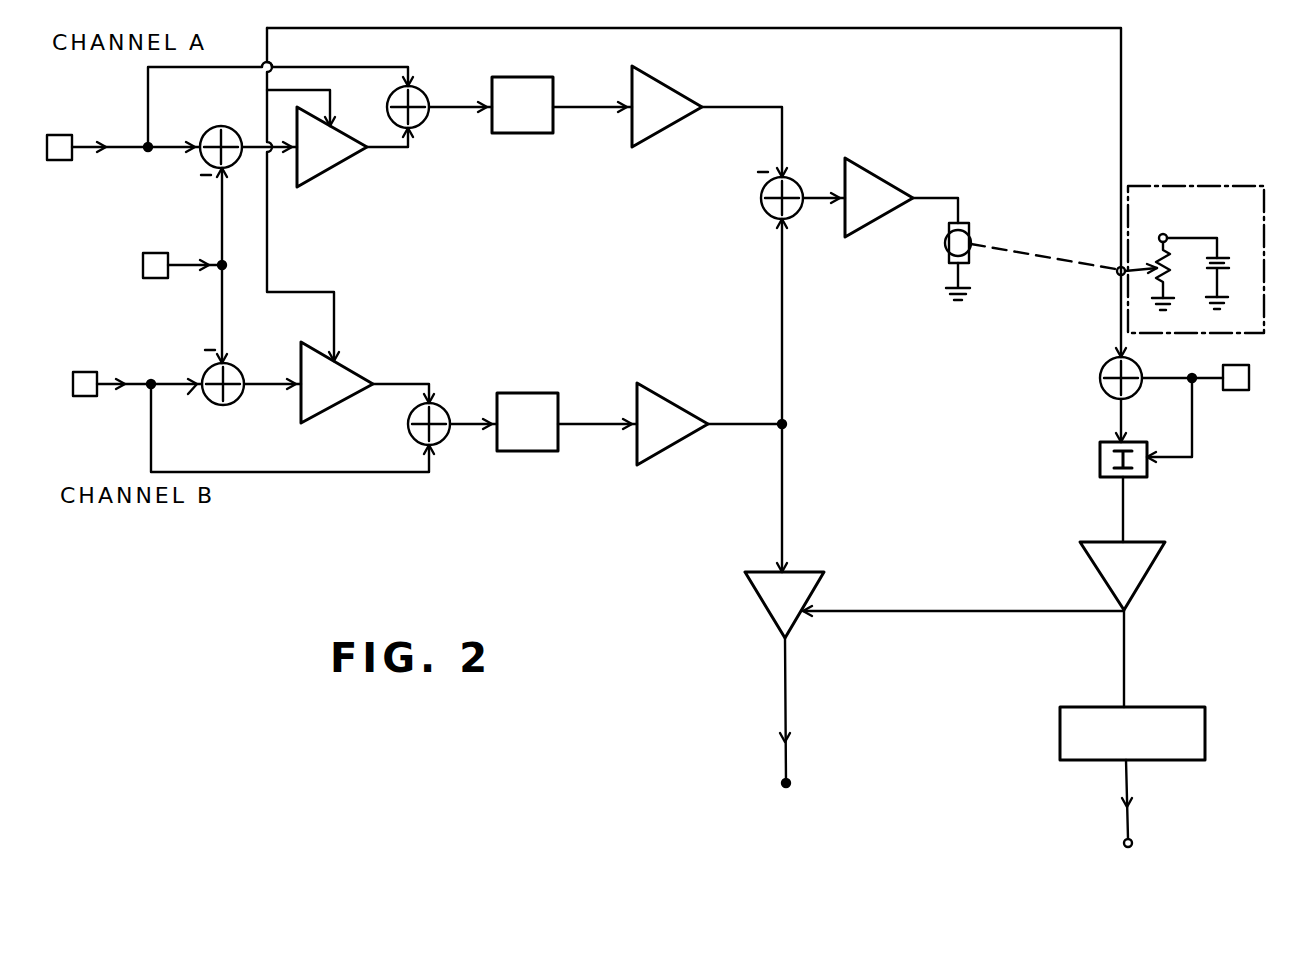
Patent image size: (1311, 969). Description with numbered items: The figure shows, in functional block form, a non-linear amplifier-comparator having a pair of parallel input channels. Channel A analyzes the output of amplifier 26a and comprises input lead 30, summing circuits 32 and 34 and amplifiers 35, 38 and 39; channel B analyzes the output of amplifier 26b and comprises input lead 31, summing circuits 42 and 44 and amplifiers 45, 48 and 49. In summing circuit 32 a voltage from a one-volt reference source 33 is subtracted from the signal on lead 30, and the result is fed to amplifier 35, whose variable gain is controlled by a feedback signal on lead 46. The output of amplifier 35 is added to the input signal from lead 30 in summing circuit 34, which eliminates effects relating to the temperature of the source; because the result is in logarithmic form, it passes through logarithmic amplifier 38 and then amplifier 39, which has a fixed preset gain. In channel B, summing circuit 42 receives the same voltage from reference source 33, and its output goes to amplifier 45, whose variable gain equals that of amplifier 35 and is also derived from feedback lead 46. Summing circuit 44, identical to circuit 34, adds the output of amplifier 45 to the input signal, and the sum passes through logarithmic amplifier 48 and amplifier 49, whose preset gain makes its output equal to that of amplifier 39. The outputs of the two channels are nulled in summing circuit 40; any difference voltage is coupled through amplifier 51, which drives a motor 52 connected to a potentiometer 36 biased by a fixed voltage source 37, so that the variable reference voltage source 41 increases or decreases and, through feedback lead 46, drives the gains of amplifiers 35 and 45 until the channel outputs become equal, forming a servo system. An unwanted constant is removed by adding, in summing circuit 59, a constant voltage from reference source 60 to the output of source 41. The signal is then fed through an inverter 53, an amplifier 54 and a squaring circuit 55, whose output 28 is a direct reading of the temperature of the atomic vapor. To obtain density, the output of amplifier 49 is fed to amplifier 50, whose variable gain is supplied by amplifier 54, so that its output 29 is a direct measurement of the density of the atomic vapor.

The amplifier 26a is at (58, 135).
The amplifier 26b is at (82, 372).
The output 28 is at (1133, 840).
The output 29 is at (791, 780).
The input lead 30 is at (84, 149).
The input lead 31 is at (107, 386).
The summing circuit 32 is at (232, 128).
The reference source 33 is at (163, 238).
The summing circuit 34 is at (430, 80).
The amplifier 35 is at (332, 169).
The potentiometer 36 is at (1168, 279).
The fixed voltage source 37 is at (1218, 257).
The logarithmic amplifier 38 is at (521, 133).
The amplifier 39 is at (662, 132).
The summing circuit 40 is at (791, 179).
The variable reference voltage source 41 is at (1155, 186).
The summing circuit 42 is at (234, 366).
The summing circuit 44 is at (440, 405).
The amplifier 45 is at (344, 367).
The feedback lead 46 is at (292, 28).
The logarithmic amplifier 48 is at (527, 393).
The amplifier 49 is at (673, 405).
The amplifier 50 is at (815, 592).
The amplifier 51 is at (880, 179).
The motor 52 is at (970, 223).
The inverter 53 is at (1100, 447).
The amplifier 54 is at (1148, 578).
The squaring circuit 55 is at (1170, 706).
The summing circuit 59 is at (1104, 367).
The reference source 60 is at (1240, 366).